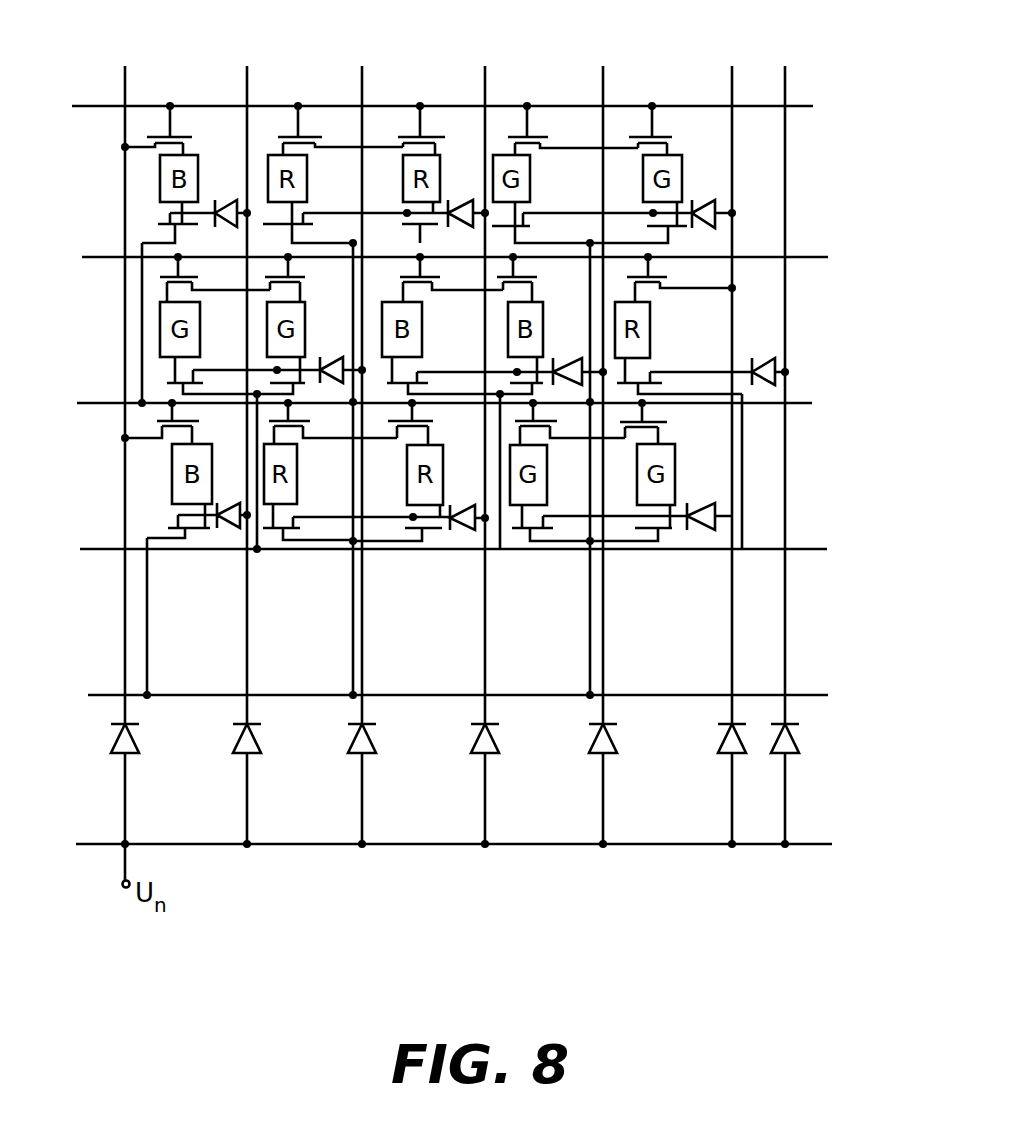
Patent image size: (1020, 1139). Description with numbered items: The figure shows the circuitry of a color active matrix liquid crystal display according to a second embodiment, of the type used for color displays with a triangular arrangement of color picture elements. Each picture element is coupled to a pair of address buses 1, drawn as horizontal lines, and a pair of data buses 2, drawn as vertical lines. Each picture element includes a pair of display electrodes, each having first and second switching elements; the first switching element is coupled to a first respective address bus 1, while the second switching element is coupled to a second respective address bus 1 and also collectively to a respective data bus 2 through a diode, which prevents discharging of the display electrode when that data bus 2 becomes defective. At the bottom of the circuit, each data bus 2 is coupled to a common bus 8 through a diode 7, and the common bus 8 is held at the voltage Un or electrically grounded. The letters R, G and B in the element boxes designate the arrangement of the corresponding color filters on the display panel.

The address bus 1 is at (813, 106).
The data bus 2 is at (731, 82).
The diode 7 is at (793, 740).
The common bus 8 is at (703, 845).